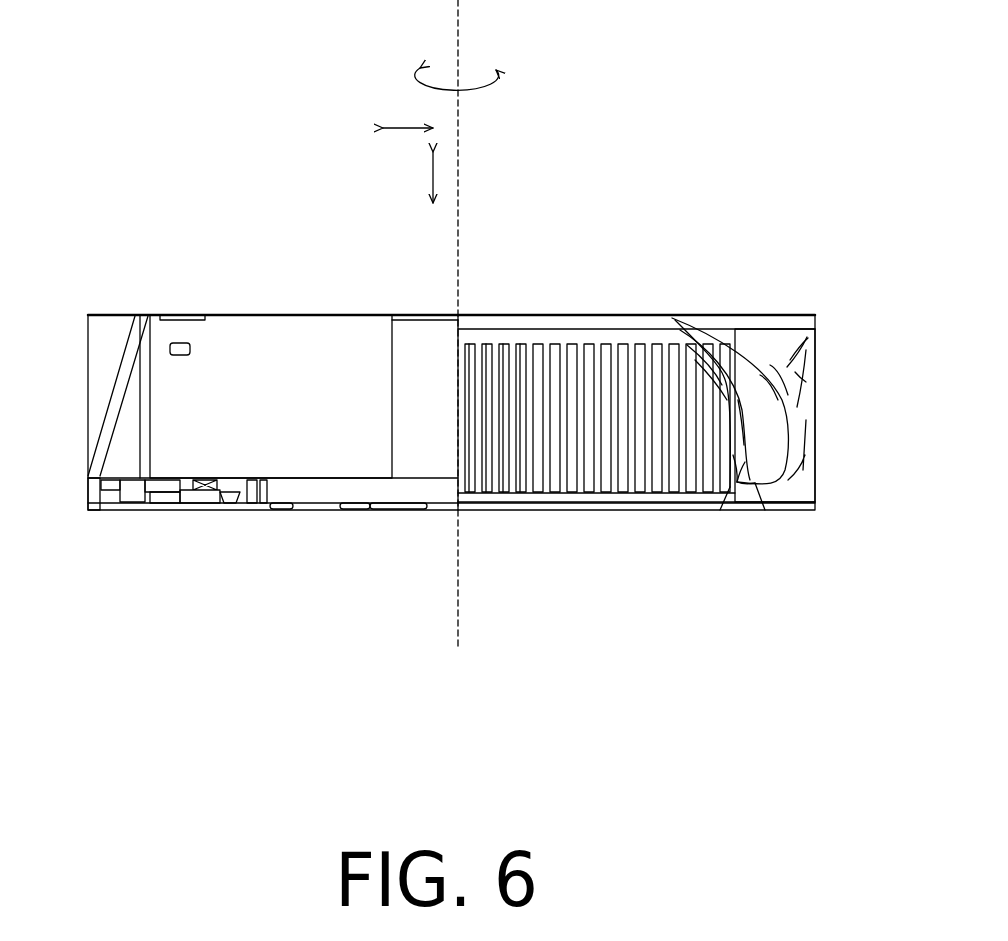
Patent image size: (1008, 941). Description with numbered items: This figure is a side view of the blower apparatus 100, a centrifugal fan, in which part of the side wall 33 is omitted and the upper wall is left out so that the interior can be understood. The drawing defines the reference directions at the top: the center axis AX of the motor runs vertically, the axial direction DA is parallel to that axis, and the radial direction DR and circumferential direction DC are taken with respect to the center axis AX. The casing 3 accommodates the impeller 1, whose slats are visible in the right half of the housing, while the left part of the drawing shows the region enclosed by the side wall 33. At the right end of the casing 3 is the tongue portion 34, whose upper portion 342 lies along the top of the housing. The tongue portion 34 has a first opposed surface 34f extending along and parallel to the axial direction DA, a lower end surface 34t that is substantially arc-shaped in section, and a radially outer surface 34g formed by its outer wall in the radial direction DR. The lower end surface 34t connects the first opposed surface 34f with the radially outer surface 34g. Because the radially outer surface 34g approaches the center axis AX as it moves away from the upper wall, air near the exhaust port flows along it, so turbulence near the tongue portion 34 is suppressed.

The blower apparatus 100 is at (667, 140).
The impeller 1 is at (524, 313).
The casing 3 is at (798, 310).
The upper portion 342 is at (747, 313).
The side wall 33 is at (168, 400).
The tongue portion 34 is at (757, 485).
The first opposed surface 34f is at (745, 412).
The radially outer surface 34g is at (795, 372).
The lower end surface 34t is at (733, 487).
The center axis AX is at (462, 22).
The radial direction DR is at (425, 127).
The circumferential direction DC is at (494, 93).
The axial direction DA is at (430, 178).